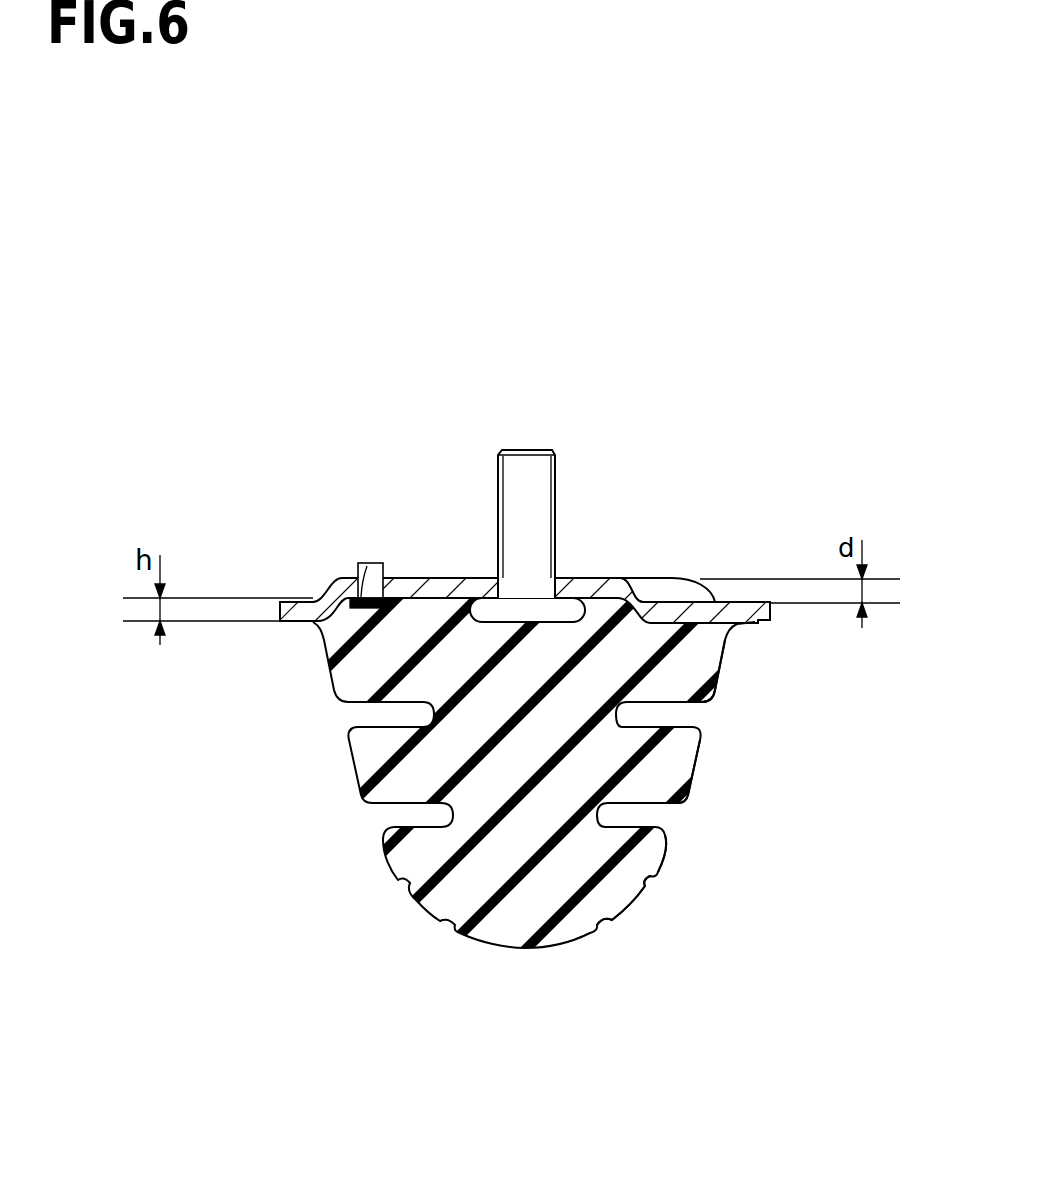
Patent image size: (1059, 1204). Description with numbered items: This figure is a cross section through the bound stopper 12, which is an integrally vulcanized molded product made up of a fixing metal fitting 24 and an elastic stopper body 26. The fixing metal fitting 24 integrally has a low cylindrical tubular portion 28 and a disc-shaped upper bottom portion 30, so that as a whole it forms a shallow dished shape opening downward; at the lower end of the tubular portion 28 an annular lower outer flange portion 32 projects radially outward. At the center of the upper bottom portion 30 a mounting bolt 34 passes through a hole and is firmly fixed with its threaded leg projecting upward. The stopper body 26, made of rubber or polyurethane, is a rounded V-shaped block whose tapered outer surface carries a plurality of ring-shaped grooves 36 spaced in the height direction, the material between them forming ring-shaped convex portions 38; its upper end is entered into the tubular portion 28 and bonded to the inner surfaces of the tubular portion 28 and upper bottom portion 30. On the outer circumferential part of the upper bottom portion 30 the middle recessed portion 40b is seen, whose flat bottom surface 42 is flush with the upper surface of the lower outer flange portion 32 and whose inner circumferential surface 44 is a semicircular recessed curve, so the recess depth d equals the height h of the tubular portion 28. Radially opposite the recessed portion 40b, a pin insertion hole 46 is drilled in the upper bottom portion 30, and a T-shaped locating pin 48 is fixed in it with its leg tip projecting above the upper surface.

The bound stopper 12 is at (550, 412).
The fixing metal fitting 24 is at (600, 578).
The stopper body 26 is at (353, 767).
The tubular portion 28 is at (313, 596).
The upper bottom portion 30 is at (460, 582).
The lower outer flange portion 32 is at (747, 613).
The mounting bolt 34 is at (530, 483).
The ring-shaped groove 36 is at (673, 705).
The ring-shaped convex portion 38 is at (703, 662).
The recessed portion 40b is at (706, 493).
The bottom surface 42 is at (672, 603).
The inner circumferential surface 44 is at (635, 592).
The pin insertion hole 46 is at (363, 577).
The locating pin 48 is at (375, 562).